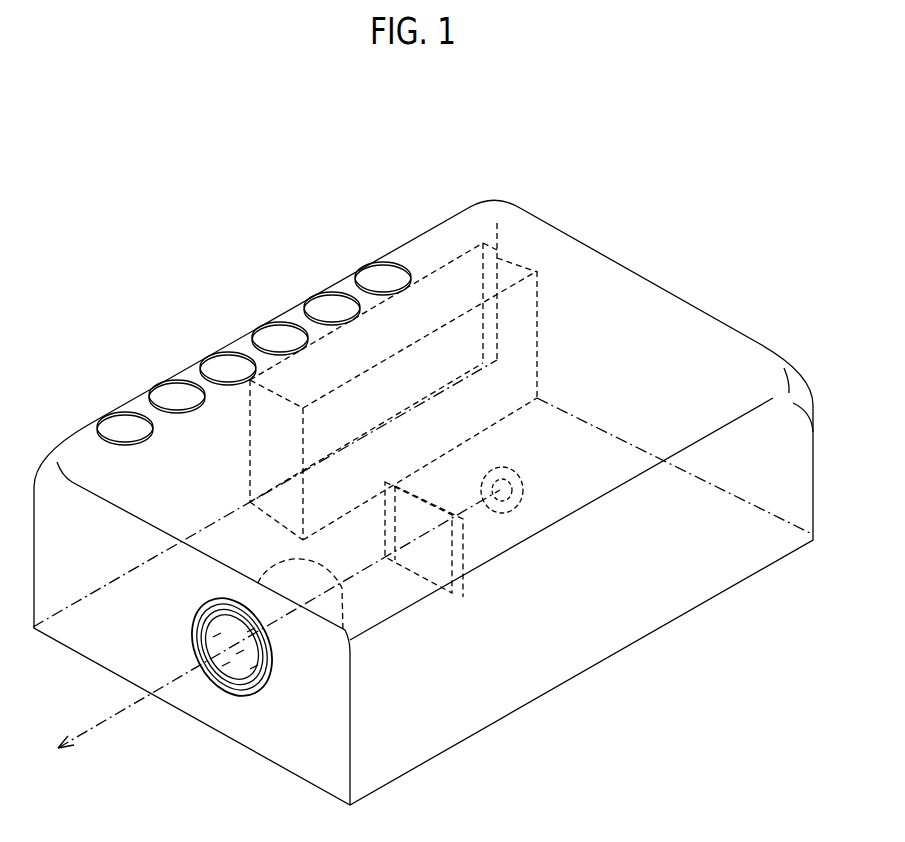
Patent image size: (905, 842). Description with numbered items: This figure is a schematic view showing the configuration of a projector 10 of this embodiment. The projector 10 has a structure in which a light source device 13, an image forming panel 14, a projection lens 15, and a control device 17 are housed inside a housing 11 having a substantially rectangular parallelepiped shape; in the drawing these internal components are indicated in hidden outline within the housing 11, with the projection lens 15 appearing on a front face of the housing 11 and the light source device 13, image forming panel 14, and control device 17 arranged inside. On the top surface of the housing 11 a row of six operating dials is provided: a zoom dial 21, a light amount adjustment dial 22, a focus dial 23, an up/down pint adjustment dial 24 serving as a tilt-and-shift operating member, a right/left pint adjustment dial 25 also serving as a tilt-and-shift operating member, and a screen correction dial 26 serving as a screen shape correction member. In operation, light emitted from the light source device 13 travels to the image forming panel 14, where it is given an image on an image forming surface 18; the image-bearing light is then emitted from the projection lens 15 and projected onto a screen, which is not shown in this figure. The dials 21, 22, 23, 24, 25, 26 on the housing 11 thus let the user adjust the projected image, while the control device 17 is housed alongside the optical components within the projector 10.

The projector 10 is at (508, 149).
The housing 11 is at (652, 298).
The light source device 13 is at (518, 480).
The image forming panel 14 is at (466, 556).
The projection lens 15 is at (297, 668).
The control device 17 is at (513, 265).
The image forming surface 18 is at (424, 571).
The zoom dial 21 is at (127, 421).
The light amount adjustment dial 22 is at (177, 391).
The focus dial 23 is at (229, 361).
The up/down pint adjustment dial 24 is at (280, 331).
The right/left pint adjustment dial 25 is at (331, 301).
The screen correction dial 26 is at (382, 272).